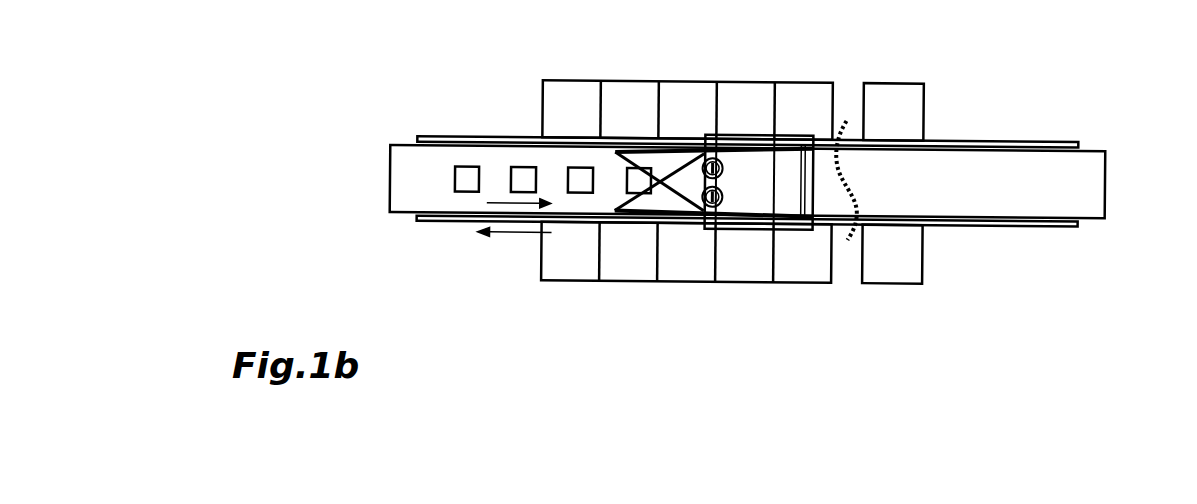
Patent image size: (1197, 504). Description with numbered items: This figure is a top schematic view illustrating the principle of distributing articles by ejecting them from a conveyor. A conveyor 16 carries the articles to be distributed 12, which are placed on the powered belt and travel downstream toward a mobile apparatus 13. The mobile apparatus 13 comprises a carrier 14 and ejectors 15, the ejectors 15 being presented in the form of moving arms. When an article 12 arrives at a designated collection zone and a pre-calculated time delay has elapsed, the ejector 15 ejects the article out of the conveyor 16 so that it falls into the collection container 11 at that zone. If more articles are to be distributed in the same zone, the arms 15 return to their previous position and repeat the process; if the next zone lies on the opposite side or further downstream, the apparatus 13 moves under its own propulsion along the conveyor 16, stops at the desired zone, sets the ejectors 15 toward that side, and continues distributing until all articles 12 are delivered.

The collection container 11 is at (627, 113).
The articles to be distributed 12 is at (583, 183).
The mobile apparatus 13 is at (807, 198).
The carrier 14 is at (750, 168).
The ejectors 15 is at (680, 150).
The conveyor 16 is at (1082, 170).